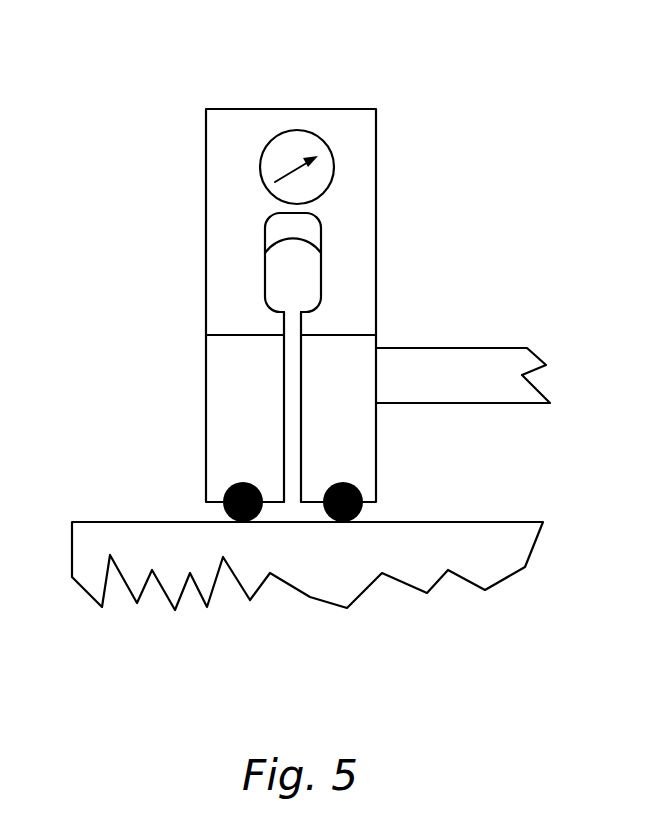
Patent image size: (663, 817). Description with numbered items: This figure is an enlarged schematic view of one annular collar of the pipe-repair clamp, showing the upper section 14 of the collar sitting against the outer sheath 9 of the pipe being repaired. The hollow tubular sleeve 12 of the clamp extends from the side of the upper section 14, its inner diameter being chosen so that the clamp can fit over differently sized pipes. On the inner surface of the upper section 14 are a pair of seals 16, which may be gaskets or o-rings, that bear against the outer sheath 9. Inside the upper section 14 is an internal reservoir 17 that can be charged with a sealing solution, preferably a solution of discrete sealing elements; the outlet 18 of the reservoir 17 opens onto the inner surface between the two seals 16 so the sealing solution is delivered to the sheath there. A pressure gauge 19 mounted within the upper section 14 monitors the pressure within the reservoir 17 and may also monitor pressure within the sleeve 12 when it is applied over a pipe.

The outer sheath 9 is at (138, 563).
The tubular sleeve 12 is at (465, 348).
The upper section 14 is at (206, 400).
The seals 16 is at (233, 512).
The internal reservoir 17 is at (253, 276).
The outlet 18 is at (298, 521).
The pressure gauge 19 is at (290, 140).